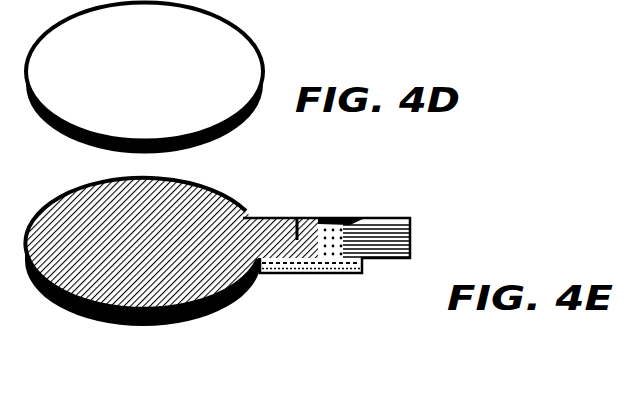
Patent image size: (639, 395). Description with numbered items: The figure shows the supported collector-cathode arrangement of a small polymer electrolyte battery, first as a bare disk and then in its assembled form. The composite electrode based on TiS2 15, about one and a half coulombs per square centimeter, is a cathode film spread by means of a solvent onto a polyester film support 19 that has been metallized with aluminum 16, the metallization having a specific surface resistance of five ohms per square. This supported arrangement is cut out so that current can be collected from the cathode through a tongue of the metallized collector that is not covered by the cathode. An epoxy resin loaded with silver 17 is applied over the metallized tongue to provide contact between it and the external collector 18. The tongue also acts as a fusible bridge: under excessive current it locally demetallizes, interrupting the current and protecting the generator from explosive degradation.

In FIG. 4D, the composite electrode based on TiS2 15 is at (227, 49).
In FIG. 4E, the aluminum metallization 16 is at (226, 201).
In FIG. 4E, the epoxy resin loaded with silver 17 is at (363, 218).
In FIG. 4E, the external collector 18 is at (386, 240).
In FIG. 4E, the polyester film support 19 is at (247, 294).